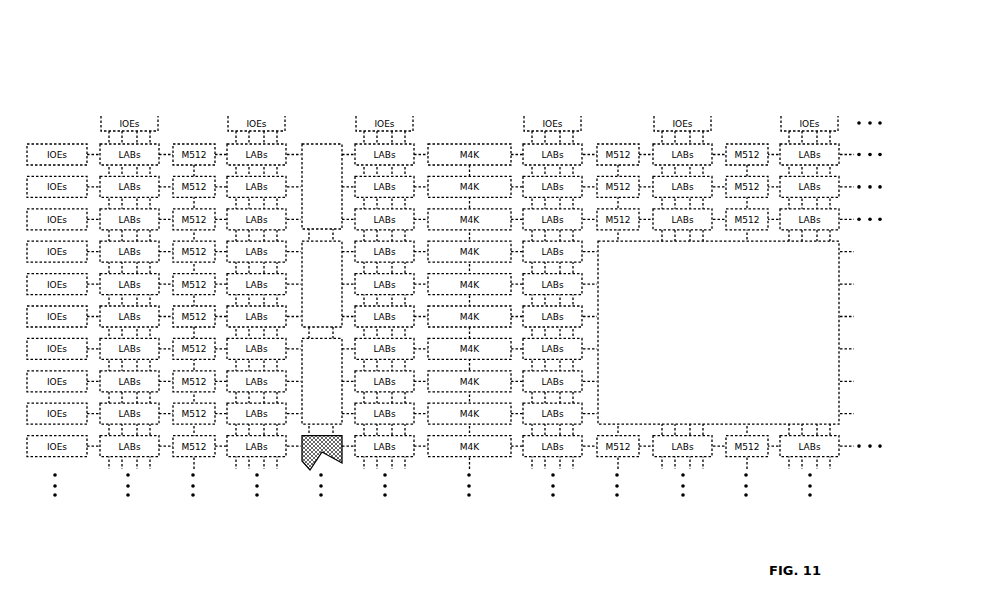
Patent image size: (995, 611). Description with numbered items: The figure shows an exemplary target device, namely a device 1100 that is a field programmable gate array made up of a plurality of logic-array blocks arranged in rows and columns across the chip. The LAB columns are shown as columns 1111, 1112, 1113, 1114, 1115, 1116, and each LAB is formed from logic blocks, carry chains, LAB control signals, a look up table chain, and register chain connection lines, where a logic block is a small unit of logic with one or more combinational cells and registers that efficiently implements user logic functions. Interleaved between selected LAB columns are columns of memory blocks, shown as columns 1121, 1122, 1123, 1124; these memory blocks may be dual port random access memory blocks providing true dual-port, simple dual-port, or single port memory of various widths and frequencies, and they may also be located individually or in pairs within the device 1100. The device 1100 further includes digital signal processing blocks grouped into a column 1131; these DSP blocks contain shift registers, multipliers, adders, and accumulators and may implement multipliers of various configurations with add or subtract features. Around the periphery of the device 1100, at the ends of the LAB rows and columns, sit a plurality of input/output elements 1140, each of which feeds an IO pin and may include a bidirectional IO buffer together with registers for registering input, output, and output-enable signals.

The device 1100 is at (70, 91).
The input/output elements 1140 is at (95, 127).
The column of LABs 1111 is at (117, 477).
The column of LABs 1112 is at (246, 477).
The column of LABs 1113 is at (374, 477).
The column of LABs 1114 is at (536, 475).
The column of LABs 1115 is at (666, 477).
The column of LABs 1116 is at (794, 477).
The column of memory blocks 1121 is at (206, 140).
The column of memory blocks 1122 is at (472, 140).
The column of memory blocks 1123 is at (625, 140).
The column of memory blocks 1124 is at (755, 140).
The column of DSP blocks 1131 is at (329, 140).